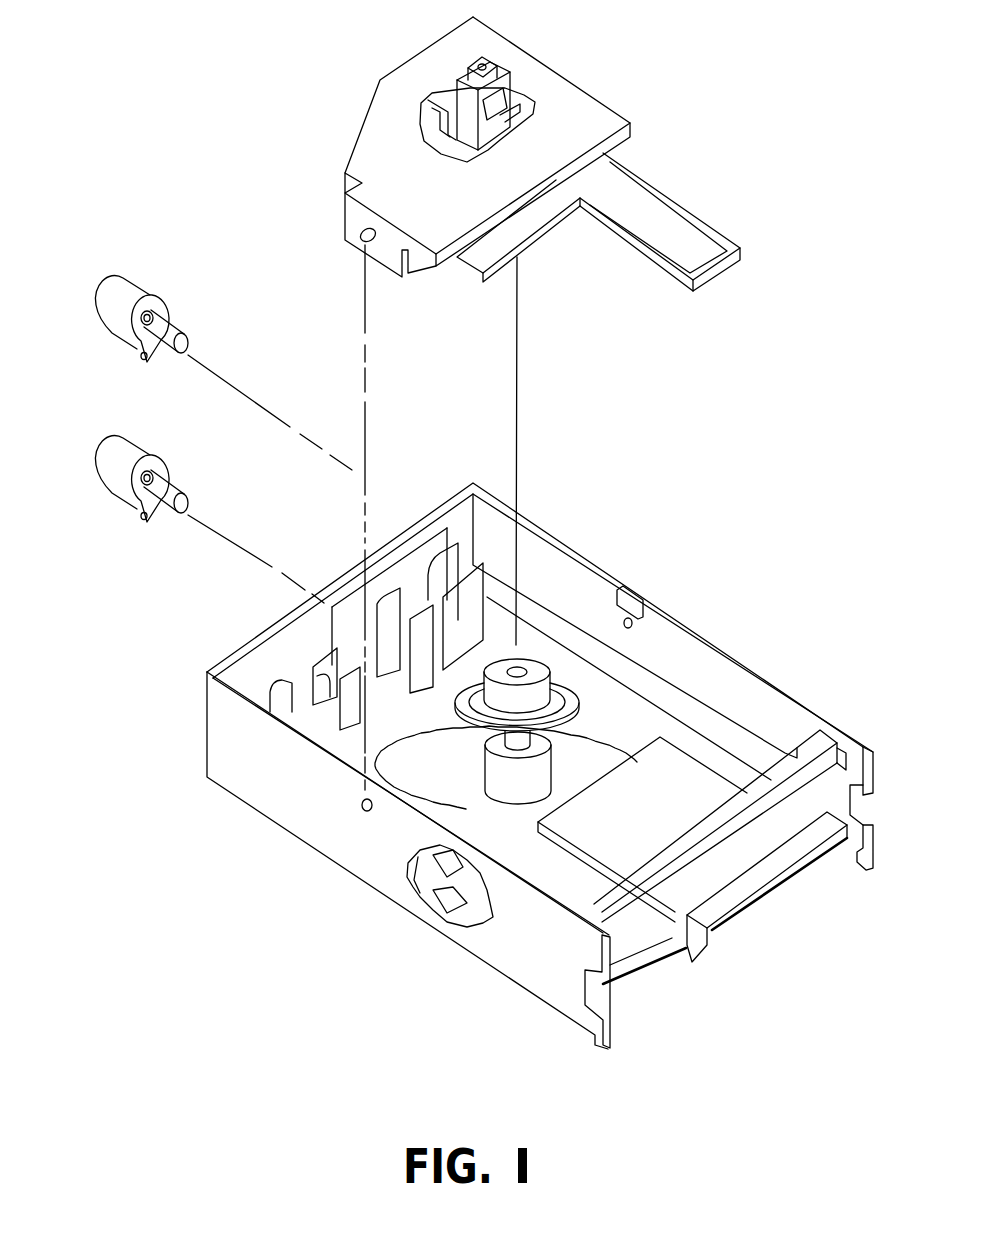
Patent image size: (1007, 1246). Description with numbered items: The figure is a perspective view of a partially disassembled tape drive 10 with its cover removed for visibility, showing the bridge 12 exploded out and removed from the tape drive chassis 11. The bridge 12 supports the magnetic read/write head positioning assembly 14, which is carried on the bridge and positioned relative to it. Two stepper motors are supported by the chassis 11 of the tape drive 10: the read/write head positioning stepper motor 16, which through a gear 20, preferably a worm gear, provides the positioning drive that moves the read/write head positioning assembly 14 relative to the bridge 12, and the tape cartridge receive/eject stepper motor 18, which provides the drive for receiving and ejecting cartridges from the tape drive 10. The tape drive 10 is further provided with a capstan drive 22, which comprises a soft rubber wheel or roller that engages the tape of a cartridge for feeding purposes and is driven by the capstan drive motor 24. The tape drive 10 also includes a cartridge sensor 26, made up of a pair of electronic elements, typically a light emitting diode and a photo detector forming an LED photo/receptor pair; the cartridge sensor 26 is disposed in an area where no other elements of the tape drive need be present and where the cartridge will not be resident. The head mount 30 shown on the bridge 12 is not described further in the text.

The tape drive 10 is at (750, 438).
The tape drive chassis 11 is at (590, 560).
The bridge 12 is at (600, 98).
The read/write head positioning assembly 14 is at (497, 62).
The read/write head positioning stepper motor 16 is at (102, 292).
The tape cartridge receive/eject stepper motor 18 is at (97, 455).
The gear 20 is at (178, 328).
The capstan drive 22 is at (580, 688).
The capstan drive motor 24 is at (467, 808).
The cartridge sensor 26 is at (430, 873).
The head mount 30 is at (458, 85).